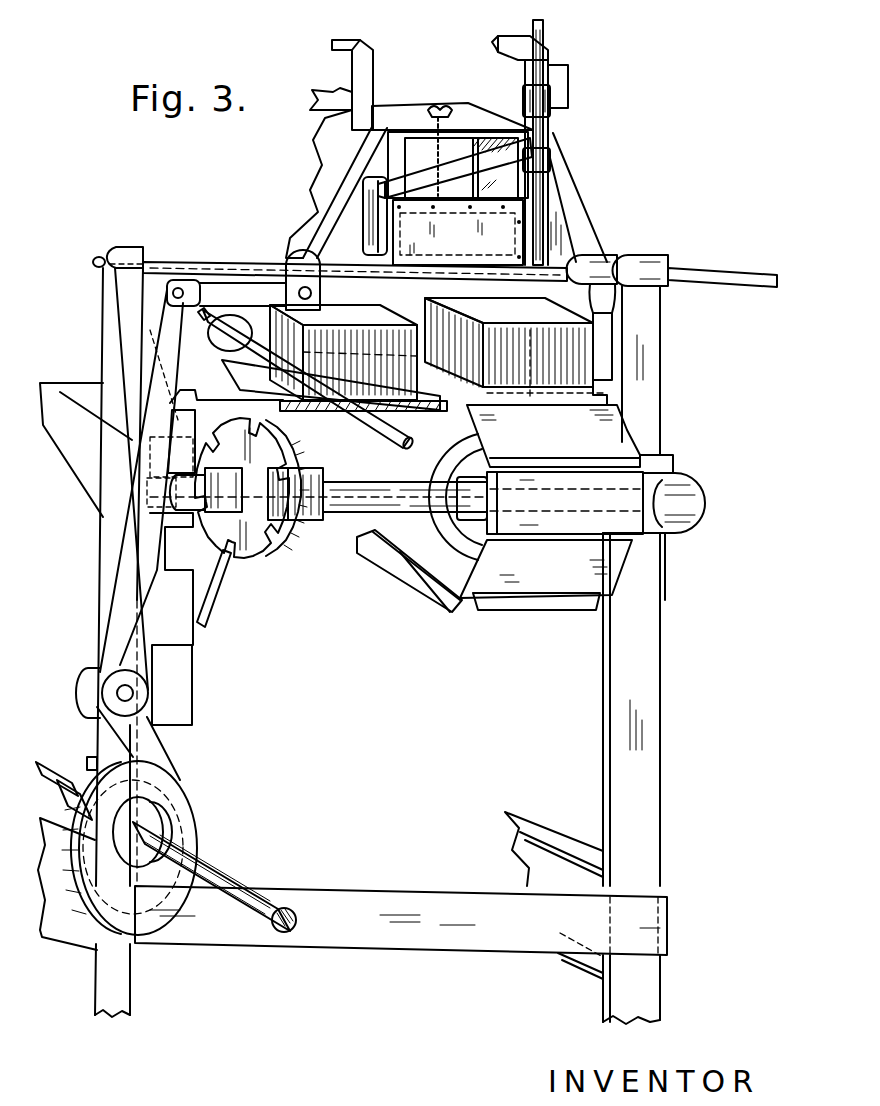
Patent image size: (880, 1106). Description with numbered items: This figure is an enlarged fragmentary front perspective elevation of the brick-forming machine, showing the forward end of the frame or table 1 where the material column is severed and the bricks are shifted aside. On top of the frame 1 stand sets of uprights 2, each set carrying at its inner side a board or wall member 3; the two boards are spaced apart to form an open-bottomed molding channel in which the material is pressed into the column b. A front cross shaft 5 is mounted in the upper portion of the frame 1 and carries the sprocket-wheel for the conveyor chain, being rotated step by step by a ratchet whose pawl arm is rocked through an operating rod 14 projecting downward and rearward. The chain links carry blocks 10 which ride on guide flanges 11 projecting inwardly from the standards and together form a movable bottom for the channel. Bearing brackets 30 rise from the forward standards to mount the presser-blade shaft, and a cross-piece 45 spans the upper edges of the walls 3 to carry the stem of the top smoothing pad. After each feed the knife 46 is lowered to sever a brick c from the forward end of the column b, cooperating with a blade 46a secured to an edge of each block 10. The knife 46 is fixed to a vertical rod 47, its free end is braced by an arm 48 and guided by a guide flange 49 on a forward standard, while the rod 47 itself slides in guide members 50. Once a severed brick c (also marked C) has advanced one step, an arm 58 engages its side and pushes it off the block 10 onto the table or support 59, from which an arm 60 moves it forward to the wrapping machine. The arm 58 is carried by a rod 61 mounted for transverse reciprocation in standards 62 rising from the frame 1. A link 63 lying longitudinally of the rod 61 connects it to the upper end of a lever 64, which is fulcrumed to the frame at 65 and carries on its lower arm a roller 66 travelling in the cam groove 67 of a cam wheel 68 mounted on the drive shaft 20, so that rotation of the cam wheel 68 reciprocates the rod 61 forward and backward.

The frame or table 1 is at (637, 664).
The uprights 2 is at (338, 212).
The board or wall member 3 is at (388, 151).
The cross shaft 5 is at (352, 490).
The block 10 is at (560, 437).
The guide flanges 11 is at (262, 459).
The operating rod 14 is at (212, 603).
The line or drive shaft 20 is at (215, 876).
The bearing brackets 30 is at (362, 67).
The cross-piece 45 is at (408, 116).
The knife 46 is at (458, 232).
The blade 46a is at (523, 604).
The vertical rod 47 is at (545, 192).
The arm 48 is at (455, 168).
The guide flange 49 is at (376, 226).
The guide members 50 is at (568, 104).
The arm 58 is at (607, 345).
The table or support 59 is at (418, 404).
The arm 60 is at (228, 340).
The rod 61 is at (703, 277).
The bearing pulleys 62 is at (133, 260).
The link 63 is at (235, 290).
The lever 64 is at (112, 557).
The fulcrum 65 is at (116, 694).
The roller 66 is at (182, 797).
The cam groove 67 is at (192, 840).
The cam wheel 68 is at (117, 928).
The brick C is at (343, 352).
The brick c is at (514, 349).
The column b is at (462, 291).